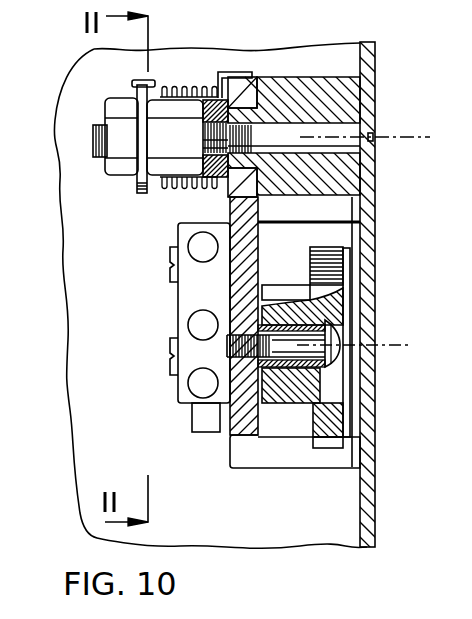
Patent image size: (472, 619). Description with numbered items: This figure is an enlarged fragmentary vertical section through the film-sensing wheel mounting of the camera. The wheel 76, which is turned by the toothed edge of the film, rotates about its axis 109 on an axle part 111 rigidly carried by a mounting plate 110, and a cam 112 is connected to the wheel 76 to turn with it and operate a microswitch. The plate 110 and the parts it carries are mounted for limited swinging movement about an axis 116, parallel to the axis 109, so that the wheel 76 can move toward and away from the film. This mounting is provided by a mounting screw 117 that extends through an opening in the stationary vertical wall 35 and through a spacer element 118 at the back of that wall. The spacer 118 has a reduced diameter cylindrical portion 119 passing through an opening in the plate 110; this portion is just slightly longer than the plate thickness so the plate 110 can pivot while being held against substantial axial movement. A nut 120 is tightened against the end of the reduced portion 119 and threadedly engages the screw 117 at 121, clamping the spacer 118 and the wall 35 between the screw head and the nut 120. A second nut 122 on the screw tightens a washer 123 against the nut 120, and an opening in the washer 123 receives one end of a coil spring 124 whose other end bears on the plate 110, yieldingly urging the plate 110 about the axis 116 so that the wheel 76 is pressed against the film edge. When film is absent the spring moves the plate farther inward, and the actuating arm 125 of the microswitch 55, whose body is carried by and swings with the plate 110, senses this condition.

The stationary vertical wall 35 is at (375, 440).
The mounting plate 55 is at (178, 317).
The wheel 76 is at (327, 252).
The axis 109 is at (387, 338).
The mounting plate 110 is at (232, 446).
The axle part 111 is at (278, 407).
The cam 112 is at (270, 290).
The axis 116 is at (385, 133).
The mounting screw 117 is at (372, 155).
The spacer element 118 is at (320, 75).
The reduced diameter cylindrical portion 119 is at (258, 78).
The nut 120 is at (175, 165).
The threaded engagement 121 is at (210, 80).
The second nut 122 is at (115, 108).
The washer 123 is at (143, 162).
The coil spring 124 is at (173, 87).
The actuating arm 125 is at (192, 415).